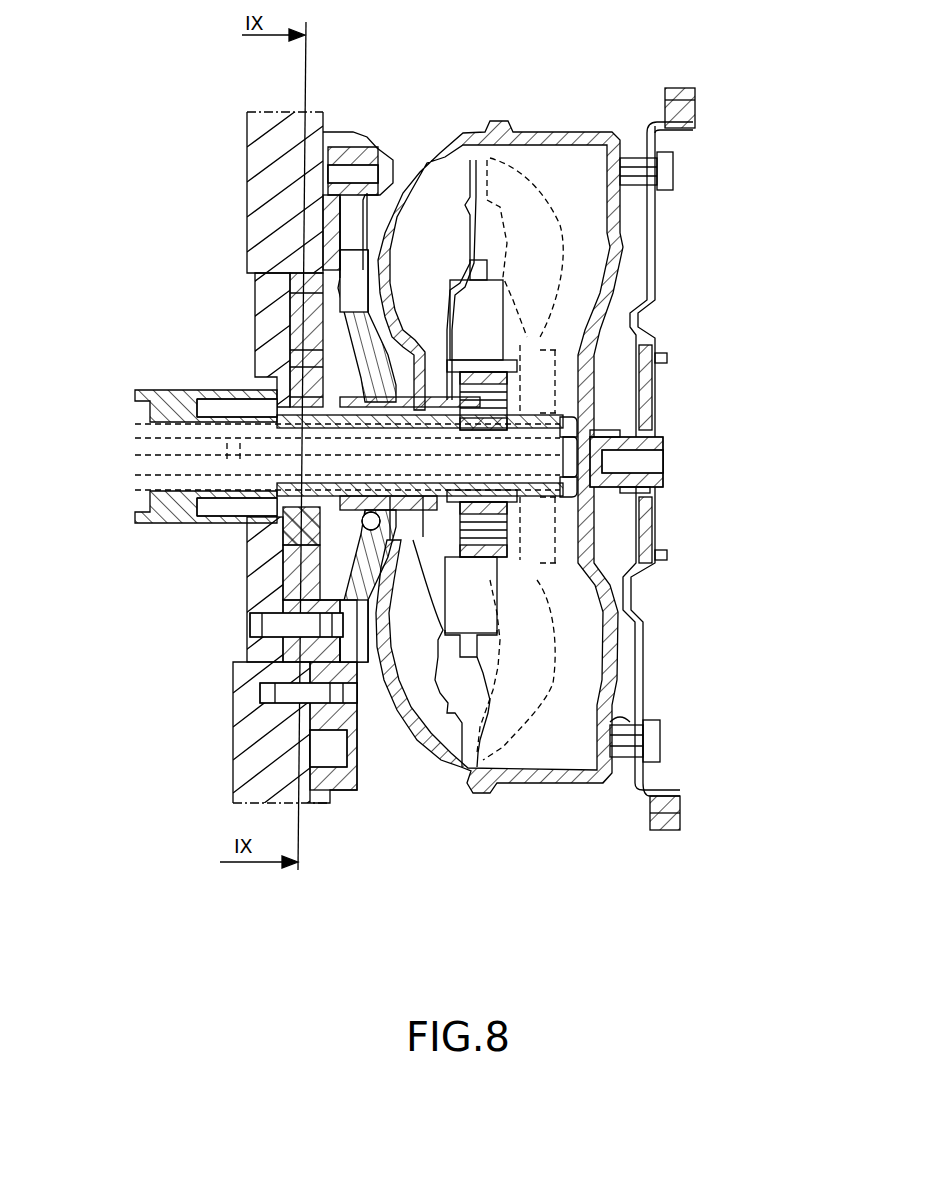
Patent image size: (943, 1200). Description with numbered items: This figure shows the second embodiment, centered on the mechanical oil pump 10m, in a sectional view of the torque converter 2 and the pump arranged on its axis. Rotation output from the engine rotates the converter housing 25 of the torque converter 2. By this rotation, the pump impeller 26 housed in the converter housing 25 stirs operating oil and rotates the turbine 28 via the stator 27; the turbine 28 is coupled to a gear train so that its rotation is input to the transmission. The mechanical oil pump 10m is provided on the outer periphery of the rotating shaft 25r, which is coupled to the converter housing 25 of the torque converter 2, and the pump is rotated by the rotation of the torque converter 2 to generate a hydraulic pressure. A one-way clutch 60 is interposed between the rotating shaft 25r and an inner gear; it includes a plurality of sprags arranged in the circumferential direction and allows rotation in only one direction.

The torque converter 2 is at (617, 307).
The mechanical oil pump 10m is at (292, 332).
The converter housing 25 is at (443, 143).
The rotating shaft 25r is at (293, 497).
The pump impeller 26 is at (433, 697).
The stator 27 is at (480, 767).
The turbine 28 is at (533, 713).
The one-way clutch 60 is at (237, 395).